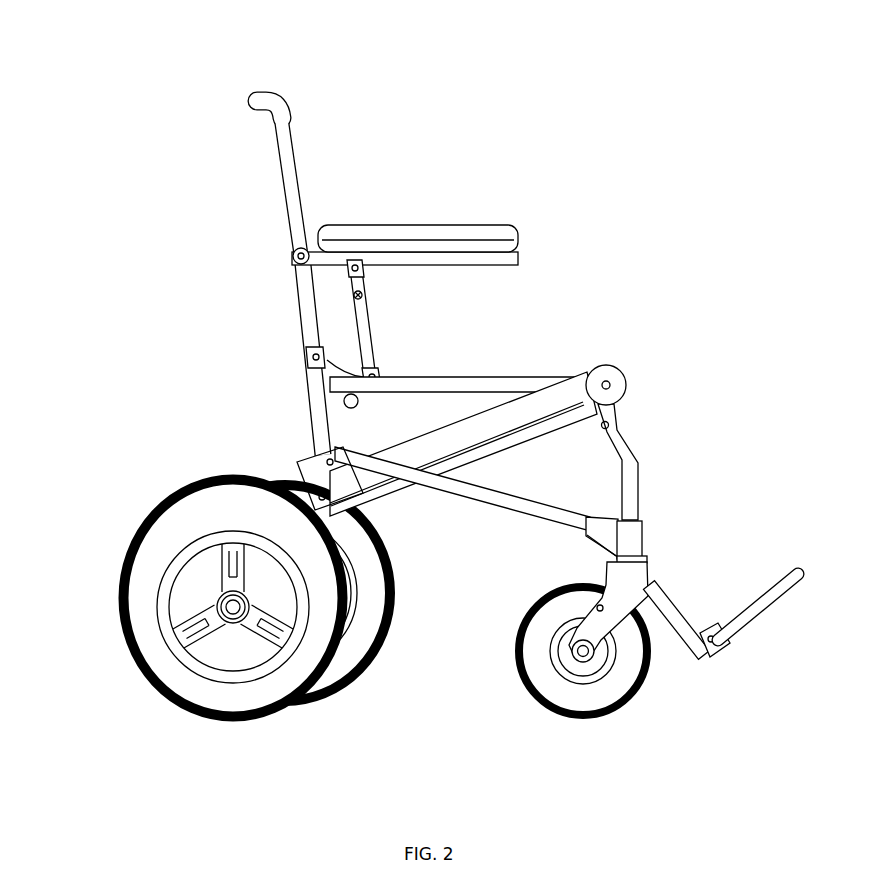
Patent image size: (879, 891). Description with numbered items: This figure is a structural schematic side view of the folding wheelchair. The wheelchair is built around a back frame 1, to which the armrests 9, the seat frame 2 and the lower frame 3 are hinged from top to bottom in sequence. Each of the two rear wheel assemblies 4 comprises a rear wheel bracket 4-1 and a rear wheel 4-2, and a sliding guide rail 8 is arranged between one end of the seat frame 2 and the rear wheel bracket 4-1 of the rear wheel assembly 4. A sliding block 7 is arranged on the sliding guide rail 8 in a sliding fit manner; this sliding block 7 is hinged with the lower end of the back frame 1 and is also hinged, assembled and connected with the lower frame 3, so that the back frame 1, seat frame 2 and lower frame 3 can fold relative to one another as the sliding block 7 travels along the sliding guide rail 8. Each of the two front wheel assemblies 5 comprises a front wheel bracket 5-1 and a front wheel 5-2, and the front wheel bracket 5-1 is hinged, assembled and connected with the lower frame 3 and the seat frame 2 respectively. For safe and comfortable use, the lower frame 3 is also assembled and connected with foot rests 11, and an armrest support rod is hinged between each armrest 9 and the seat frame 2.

The back frame 1 is at (283, 120).
The seat frame 2 is at (327, 360).
The lower frame 3 is at (323, 453).
The rear wheel assembly 4 is at (211, 596).
The rear wheel bracket 4-1 is at (187, 550).
The rear wheel 4-2 is at (158, 658).
The front wheel assembly 5 is at (627, 683).
The front wheel bracket 5-1 is at (650, 648).
The front wheel 5-2 is at (593, 712).
The sliding block 7 is at (320, 473).
The sliding guide rail 8 is at (533, 407).
The armrest 9 is at (447, 233).
The foot rest 11 is at (773, 595).